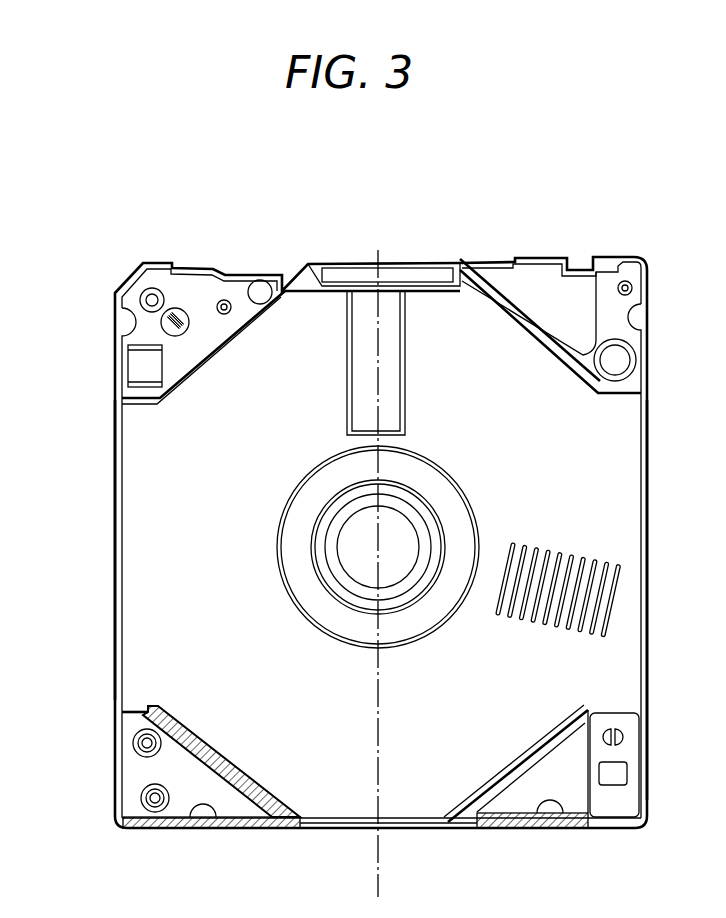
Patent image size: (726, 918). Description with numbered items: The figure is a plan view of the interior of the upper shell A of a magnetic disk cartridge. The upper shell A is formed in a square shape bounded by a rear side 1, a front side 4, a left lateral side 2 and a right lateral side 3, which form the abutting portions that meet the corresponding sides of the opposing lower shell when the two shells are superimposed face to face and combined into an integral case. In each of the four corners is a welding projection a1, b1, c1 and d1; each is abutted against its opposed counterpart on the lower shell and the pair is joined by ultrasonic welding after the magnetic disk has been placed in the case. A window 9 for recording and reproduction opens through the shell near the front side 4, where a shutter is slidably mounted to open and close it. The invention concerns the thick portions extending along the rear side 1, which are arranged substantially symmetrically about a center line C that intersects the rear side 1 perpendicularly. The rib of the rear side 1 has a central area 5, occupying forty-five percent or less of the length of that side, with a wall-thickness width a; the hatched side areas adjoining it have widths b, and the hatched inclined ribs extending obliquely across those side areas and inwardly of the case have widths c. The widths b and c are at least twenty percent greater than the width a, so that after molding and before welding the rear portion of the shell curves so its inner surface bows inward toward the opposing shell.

The rear side 1 is at (333, 831).
The left lateral side 2 is at (650, 567).
The right lateral side 3 is at (113, 601).
The front side 4 is at (427, 259).
The rib central area 5 is at (370, 823).
The window 9 is at (392, 382).
The upper shell A is at (384, 236).
The center line C is at (377, 878).
The width of rib central area a is at (413, 783).
The width of rib side areas b is at (233, 797).
The width of inclined ribs c is at (195, 787).
The welding projection a1 is at (143, 803).
The welding projection b1 is at (146, 296).
The welding projection c1 is at (629, 284).
The welding projection d1 is at (624, 738).